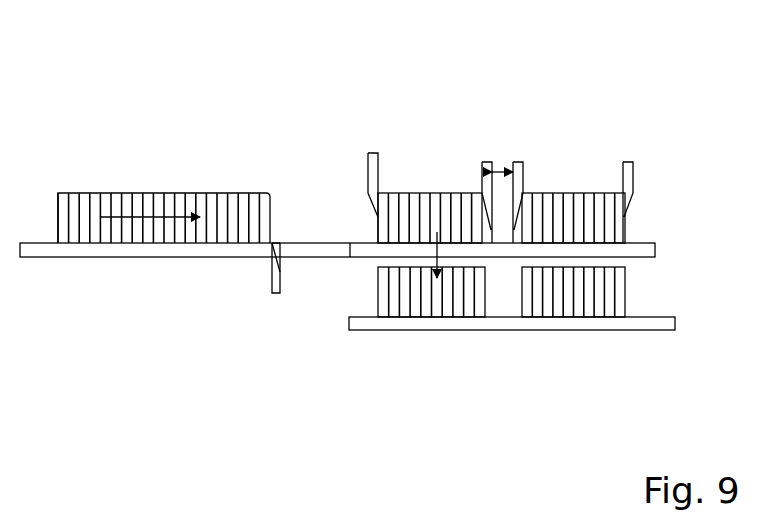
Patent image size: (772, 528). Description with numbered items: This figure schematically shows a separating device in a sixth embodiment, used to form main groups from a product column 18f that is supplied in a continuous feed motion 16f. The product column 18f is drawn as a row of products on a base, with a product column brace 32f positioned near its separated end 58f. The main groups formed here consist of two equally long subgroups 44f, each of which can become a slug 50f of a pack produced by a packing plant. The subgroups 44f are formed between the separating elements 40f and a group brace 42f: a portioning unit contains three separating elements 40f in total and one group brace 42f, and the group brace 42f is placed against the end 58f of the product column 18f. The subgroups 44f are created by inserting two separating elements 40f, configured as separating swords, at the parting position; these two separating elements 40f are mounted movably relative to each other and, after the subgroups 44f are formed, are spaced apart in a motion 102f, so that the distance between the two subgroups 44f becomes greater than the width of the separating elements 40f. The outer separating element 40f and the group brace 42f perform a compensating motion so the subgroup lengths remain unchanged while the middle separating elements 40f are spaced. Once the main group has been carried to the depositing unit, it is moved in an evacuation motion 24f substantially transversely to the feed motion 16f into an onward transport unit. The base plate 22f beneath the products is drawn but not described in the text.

The feed motion 16f is at (178, 205).
The product column 18f is at (113, 172).
The end of the product column 58f is at (272, 203).
The product column brace 32f is at (278, 270).
The base plate 22f is at (643, 246).
The evacuation motion 24f is at (436, 250).
The separating element 40f is at (372, 152).
The group brace 42f is at (630, 162).
The subgroup 44f is at (457, 178).
The slug 50f is at (422, 185).
The motion 102f is at (518, 169).